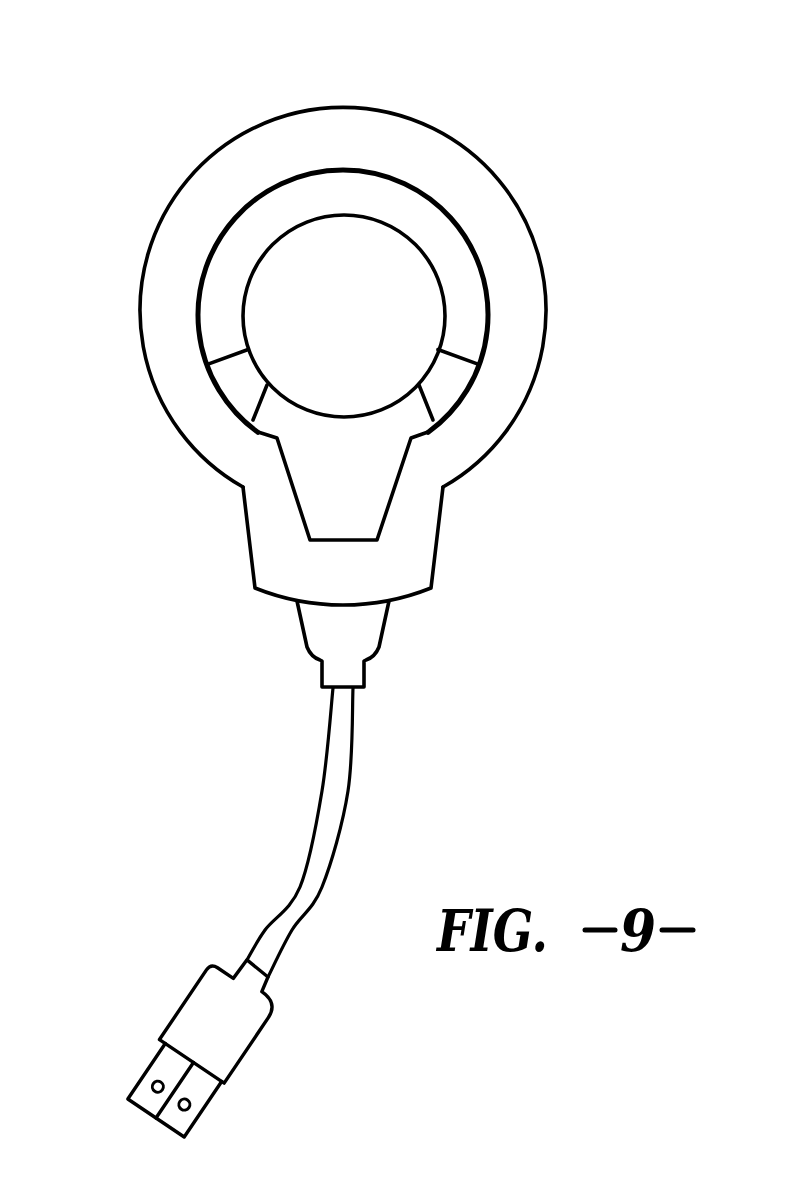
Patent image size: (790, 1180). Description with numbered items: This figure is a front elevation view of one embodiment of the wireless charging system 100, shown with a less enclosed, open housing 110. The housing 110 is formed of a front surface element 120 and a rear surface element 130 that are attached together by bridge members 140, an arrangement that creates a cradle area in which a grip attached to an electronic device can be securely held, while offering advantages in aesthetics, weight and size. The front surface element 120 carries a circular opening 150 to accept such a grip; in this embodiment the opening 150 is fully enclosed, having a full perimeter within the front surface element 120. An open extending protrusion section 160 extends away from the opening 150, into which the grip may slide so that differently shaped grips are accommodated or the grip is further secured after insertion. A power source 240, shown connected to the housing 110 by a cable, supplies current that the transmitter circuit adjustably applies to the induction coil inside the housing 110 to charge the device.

The wireless charging system 100 is at (350, 573).
The housing 110 is at (138, 312).
The front surface element 120 is at (523, 317).
The rear surface element 130 is at (338, 243).
The bridge members 140 is at (240, 385).
The opening 150 is at (377, 283).
The extending protrusion section 160 is at (337, 490).
The power source 240 is at (362, 630).